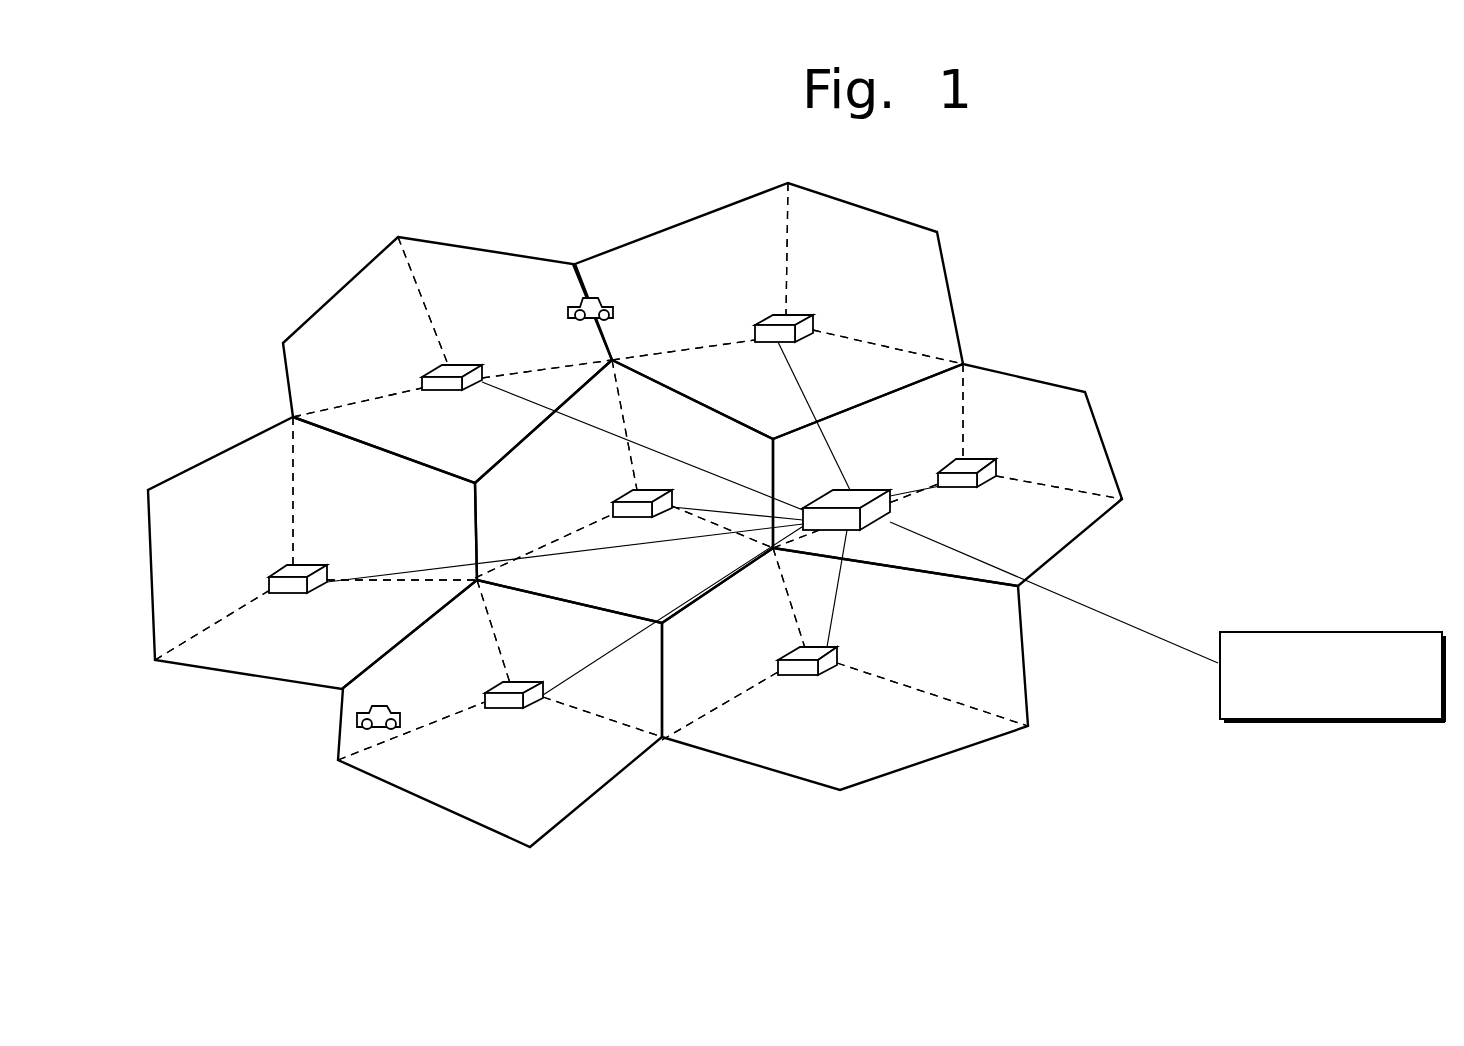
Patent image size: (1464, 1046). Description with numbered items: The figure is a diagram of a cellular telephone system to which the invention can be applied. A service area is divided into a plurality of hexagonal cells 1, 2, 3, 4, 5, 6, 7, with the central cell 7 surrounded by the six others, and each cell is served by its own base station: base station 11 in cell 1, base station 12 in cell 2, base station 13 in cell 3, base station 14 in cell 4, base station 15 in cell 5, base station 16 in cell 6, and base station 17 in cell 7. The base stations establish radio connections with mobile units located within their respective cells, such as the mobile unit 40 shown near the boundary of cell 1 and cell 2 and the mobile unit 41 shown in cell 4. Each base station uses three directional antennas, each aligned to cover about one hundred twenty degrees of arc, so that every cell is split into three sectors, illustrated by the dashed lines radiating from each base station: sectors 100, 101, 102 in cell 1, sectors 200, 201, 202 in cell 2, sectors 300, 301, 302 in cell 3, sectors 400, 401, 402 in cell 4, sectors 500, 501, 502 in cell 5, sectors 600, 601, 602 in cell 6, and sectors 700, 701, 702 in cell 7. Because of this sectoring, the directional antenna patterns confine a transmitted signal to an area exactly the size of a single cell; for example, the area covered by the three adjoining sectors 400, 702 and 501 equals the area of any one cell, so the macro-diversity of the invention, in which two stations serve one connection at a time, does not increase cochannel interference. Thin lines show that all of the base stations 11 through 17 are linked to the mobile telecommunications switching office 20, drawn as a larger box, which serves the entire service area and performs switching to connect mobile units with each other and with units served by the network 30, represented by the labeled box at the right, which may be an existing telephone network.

The cell 1 is at (857, 200).
The cell 2 is at (455, 243).
The cell 3 is at (148, 577).
The cell 4 is at (397, 787).
The cell 5 is at (923, 767).
The cell 6 is at (1108, 511).
The cell 7 is at (497, 468).
The base station 11 is at (808, 327).
The base station 12 is at (478, 378).
The base station 13 is at (327, 580).
The base station 14 is at (500, 710).
The base station 15 is at (823, 660).
The base station 16 is at (993, 478).
The base station 17 is at (613, 507).
The mobile telecommunications switching office 20 is at (833, 490).
The network 30 is at (1333, 630).
The mobile unit 40 is at (597, 292).
The mobile unit 41 is at (385, 703).
The sector 100 is at (816, 237).
The sector 101 is at (708, 243).
The sector 102 is at (744, 413).
The sector 200 is at (449, 290).
The sector 201 is at (338, 328).
The sector 202 is at (423, 455).
The sector 300 is at (341, 488).
The sector 301 is at (178, 520).
The sector 302 is at (271, 655).
The sector 400 is at (538, 638).
The sector 401 is at (408, 657).
The sector 402 is at (548, 780).
The sector 500 is at (904, 608).
The sector 501 is at (686, 660).
The sector 502 is at (848, 740).
The sector 600 is at (1004, 412).
The sector 601 is at (869, 435).
The sector 602 is at (988, 557).
The sector 700 is at (674, 445).
The sector 701 is at (531, 460).
The sector 702 is at (621, 598).